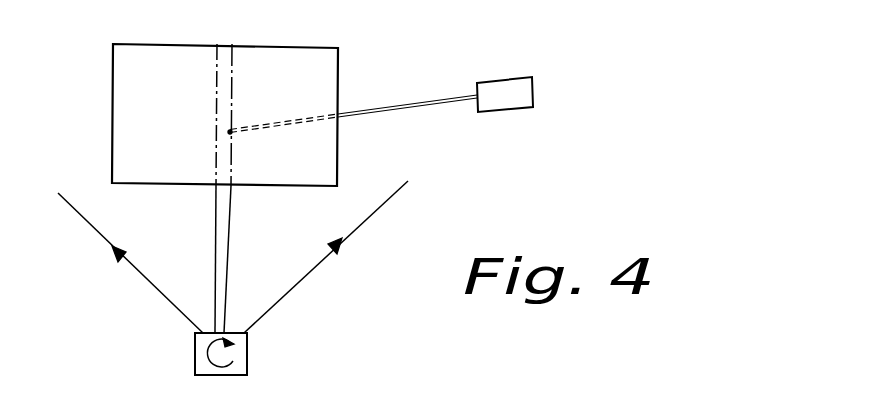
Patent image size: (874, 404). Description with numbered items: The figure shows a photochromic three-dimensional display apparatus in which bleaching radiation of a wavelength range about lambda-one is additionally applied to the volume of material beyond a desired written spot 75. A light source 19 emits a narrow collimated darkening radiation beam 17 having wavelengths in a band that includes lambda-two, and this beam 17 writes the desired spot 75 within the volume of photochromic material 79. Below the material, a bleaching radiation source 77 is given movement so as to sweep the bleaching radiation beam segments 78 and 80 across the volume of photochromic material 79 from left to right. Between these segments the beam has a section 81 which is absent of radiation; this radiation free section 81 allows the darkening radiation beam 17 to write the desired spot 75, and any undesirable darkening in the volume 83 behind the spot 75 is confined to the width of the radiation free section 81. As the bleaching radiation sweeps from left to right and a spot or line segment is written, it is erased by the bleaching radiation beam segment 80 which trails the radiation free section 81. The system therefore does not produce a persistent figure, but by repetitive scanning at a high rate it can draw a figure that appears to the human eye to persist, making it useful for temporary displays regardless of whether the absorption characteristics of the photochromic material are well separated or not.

The radiation beam 17 is at (432, 100).
The light source 19 is at (525, 87).
The written spot 75 is at (235, 131).
The bleaching radiation source 77 is at (247, 353).
The bleaching radiation beam segment 78 is at (283, 292).
The volume of photochromic material 79 is at (253, 115).
The bleaching radiation beam segment 80 is at (167, 277).
The radiation free section 81 is at (230, 218).
The volume behind the spot 83 is at (228, 131).